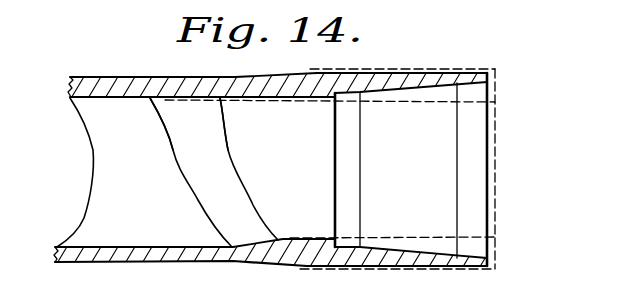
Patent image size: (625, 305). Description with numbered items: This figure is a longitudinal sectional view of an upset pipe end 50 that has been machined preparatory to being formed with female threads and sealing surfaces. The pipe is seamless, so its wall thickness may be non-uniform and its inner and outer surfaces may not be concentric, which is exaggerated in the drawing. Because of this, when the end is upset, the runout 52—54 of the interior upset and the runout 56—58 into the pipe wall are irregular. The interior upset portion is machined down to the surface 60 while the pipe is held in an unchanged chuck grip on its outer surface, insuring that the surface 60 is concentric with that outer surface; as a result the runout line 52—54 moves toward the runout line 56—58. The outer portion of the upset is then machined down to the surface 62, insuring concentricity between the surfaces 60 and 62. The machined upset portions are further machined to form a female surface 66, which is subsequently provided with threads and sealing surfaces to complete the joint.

The pipe end 50 is at (71, 99).
The runout of the interior upset 52 is at (221, 100).
The runout of the interior upset 54 is at (277, 240).
The runout into the pipe wall 56 is at (148, 99).
The runout into the pipe wall 58 is at (232, 246).
The machined interior surface 60 is at (288, 100).
The machined outer surface 62 is at (380, 75).
The female surface 66 is at (404, 88).